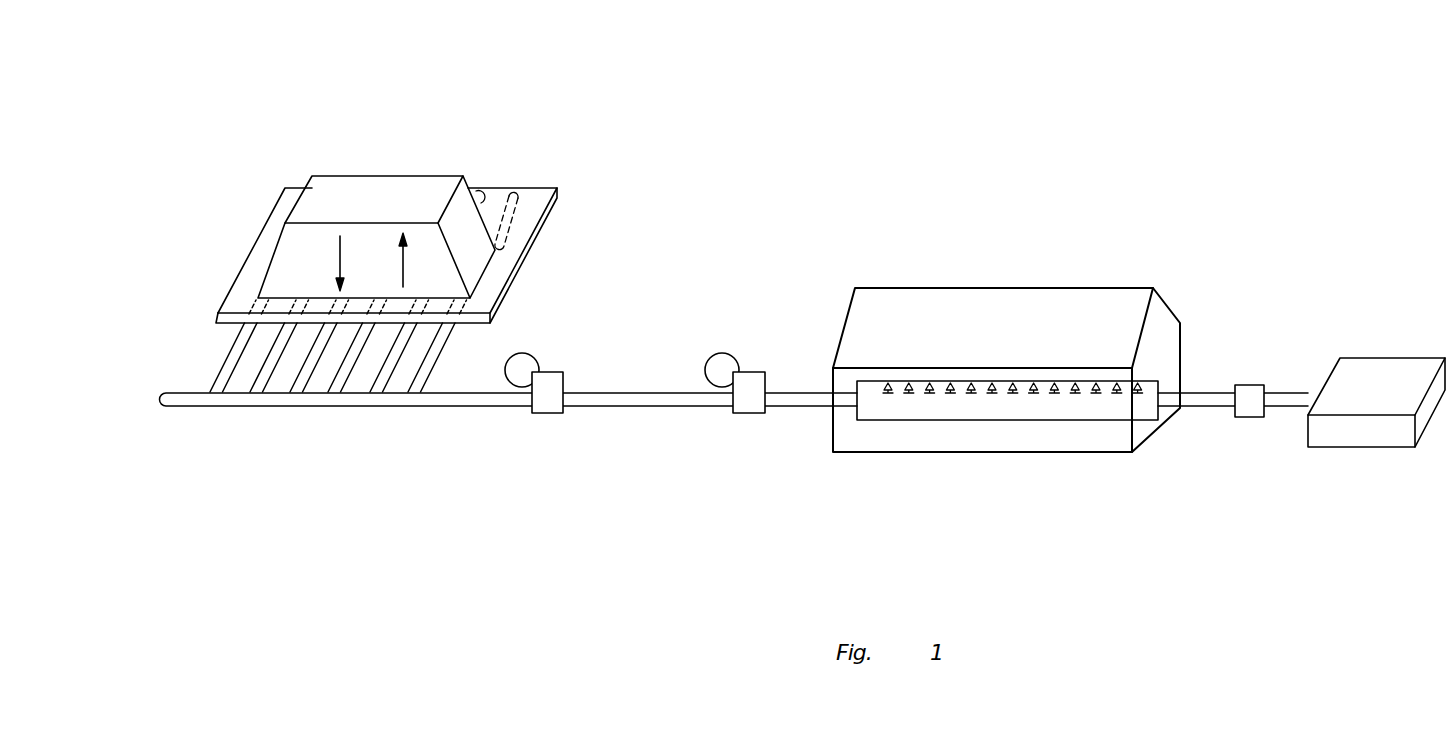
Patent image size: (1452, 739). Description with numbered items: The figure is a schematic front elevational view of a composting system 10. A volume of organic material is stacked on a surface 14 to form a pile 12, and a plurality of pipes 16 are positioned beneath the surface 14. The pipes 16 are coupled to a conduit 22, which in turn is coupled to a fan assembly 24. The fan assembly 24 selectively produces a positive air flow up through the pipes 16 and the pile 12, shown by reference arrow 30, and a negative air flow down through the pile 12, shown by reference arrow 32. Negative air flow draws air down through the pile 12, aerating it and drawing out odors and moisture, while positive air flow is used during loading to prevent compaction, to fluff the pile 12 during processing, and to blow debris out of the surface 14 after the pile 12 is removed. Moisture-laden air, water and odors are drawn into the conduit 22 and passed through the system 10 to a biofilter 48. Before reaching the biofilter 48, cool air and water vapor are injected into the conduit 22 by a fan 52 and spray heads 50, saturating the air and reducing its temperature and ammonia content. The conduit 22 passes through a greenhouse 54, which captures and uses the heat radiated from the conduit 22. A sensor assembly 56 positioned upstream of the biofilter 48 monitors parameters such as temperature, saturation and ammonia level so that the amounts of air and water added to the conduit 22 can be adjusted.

The composting system 10 is at (294, 144).
The pile 12 is at (295, 258).
The surface 14 is at (522, 222).
The pipes 16 is at (260, 372).
The conduit 22 is at (178, 398).
The fan assembly 24 is at (570, 335).
The reference arrow 30 is at (405, 268).
The reference arrow 32 is at (340, 255).
The biofilter 48 is at (1380, 438).
The spray heads 50 is at (973, 386).
The fan 52 is at (749, 407).
The greenhouse 54 is at (1082, 278).
The sensor assembly 56 is at (1250, 385).